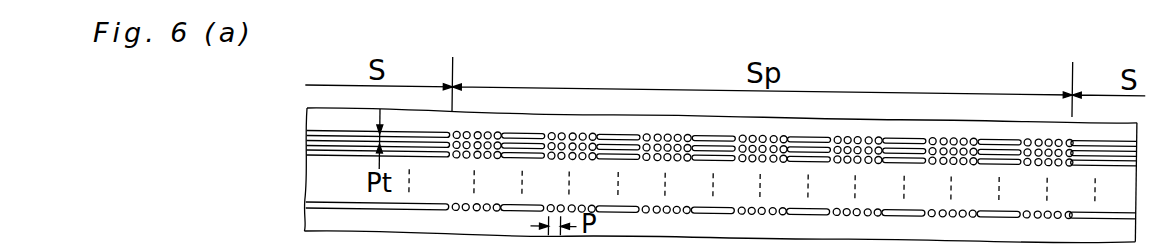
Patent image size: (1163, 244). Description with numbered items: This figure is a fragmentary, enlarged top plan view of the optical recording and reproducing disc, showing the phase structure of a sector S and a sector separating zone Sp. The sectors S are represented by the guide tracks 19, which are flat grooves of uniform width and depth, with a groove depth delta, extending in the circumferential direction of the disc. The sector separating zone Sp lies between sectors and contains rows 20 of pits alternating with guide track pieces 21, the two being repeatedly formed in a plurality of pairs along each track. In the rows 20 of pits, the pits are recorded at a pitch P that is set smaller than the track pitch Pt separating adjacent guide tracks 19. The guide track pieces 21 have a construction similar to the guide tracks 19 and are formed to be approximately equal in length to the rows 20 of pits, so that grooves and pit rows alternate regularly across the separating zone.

The guide track 19 is at (318, 133).
The row of pits 20 is at (448, 128).
The guide track piece 21 is at (503, 128).